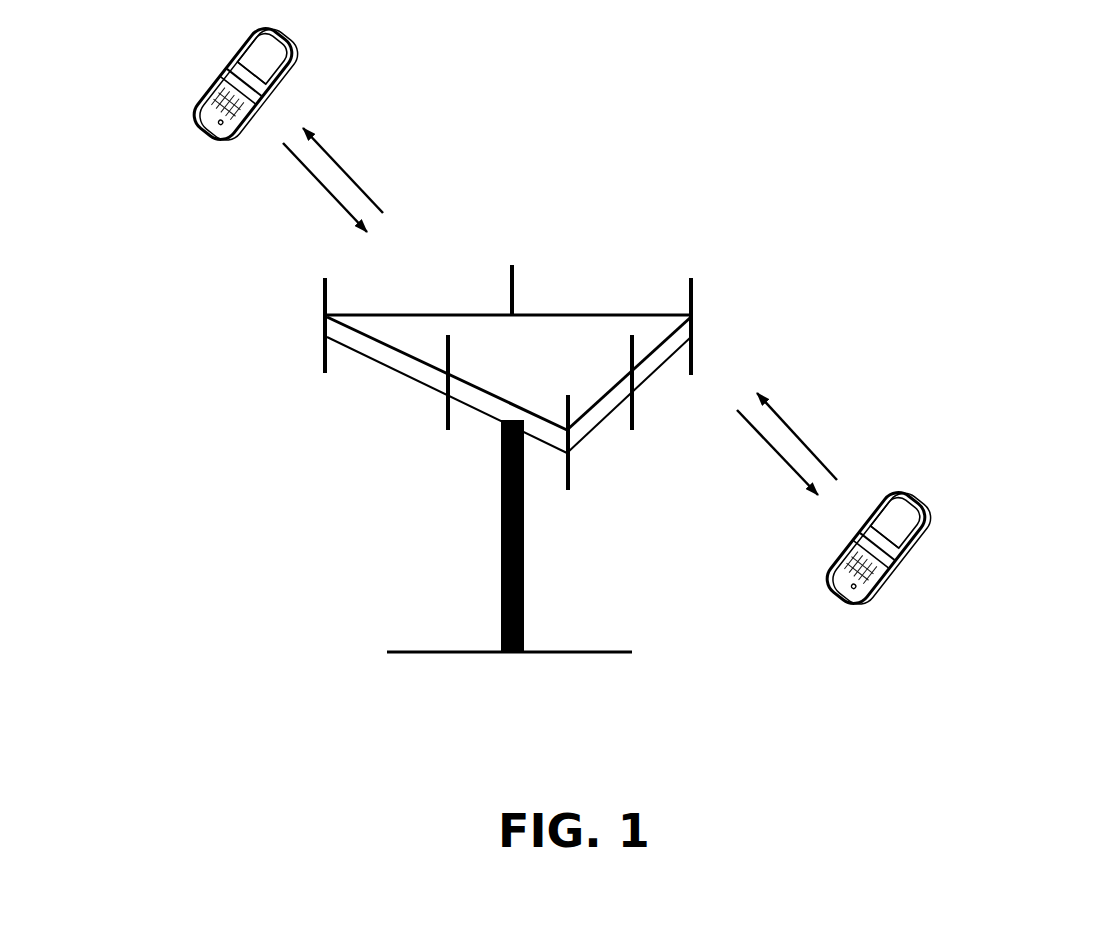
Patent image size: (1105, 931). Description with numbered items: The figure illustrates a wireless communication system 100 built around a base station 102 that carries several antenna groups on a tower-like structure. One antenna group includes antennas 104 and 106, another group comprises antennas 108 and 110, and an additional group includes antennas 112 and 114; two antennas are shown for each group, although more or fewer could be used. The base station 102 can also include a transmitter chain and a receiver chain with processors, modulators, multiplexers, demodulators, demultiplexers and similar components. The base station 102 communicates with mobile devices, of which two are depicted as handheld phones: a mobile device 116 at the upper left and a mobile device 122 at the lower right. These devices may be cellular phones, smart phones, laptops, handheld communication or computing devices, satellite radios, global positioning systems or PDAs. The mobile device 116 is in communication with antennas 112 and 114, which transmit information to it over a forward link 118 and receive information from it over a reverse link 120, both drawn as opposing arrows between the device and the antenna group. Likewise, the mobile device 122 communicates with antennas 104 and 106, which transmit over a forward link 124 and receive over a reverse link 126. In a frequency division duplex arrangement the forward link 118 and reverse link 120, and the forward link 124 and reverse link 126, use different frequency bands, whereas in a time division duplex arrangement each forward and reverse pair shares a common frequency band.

The wireless communication system 100 is at (973, 92).
The base station 102 is at (524, 652).
The antenna 104 is at (691, 280).
The antenna 106 is at (632, 412).
The antenna 108 is at (568, 474).
The antenna 110 is at (448, 430).
The antenna 112 is at (325, 280).
The antenna 114 is at (513, 283).
The mobile device 116 is at (252, 40).
The forward link 118 is at (345, 170).
The reverse link 120 is at (335, 202).
The mobile device 122 is at (883, 505).
The forward link 124 is at (782, 462).
The reverse link 126 is at (793, 430).